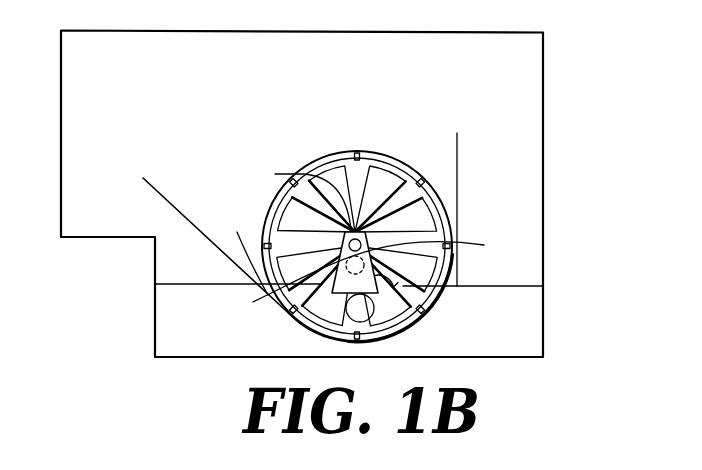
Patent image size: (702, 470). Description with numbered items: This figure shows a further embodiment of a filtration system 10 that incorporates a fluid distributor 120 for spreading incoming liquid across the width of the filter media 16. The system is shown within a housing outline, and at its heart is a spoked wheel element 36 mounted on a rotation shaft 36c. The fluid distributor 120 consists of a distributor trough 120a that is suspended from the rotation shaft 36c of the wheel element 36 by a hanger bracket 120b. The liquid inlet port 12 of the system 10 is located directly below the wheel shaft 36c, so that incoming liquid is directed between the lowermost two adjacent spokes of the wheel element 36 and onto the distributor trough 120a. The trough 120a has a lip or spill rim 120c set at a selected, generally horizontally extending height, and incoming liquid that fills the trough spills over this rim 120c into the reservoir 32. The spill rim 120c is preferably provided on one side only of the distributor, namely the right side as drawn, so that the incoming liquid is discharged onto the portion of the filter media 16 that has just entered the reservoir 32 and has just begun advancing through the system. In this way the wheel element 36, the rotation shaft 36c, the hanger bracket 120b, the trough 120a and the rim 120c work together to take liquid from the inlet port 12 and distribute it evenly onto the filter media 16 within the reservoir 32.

The filtration system 10 is at (543, 77).
The liquid inlet port 12 is at (383, 267).
The filter media 16 is at (458, 152).
The reservoir 32 is at (242, 250).
The wheel element 36 is at (371, 152).
The rotation shaft 36c is at (289, 194).
The fluid distributor 120 is at (290, 312).
The distributor trough 120a is at (408, 300).
The hanger bracket 120b is at (253, 302).
The spill rim 120c is at (415, 300).